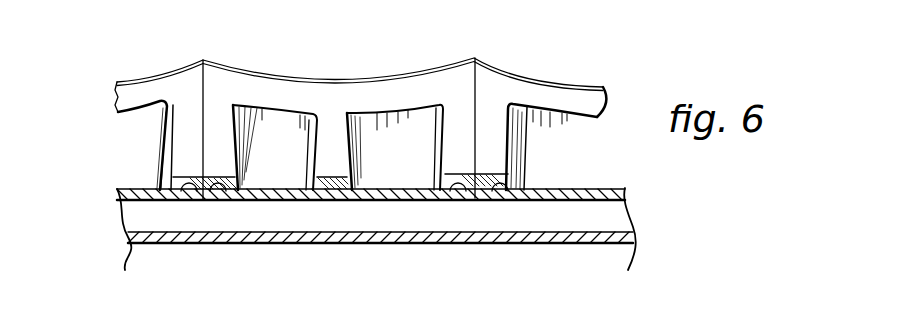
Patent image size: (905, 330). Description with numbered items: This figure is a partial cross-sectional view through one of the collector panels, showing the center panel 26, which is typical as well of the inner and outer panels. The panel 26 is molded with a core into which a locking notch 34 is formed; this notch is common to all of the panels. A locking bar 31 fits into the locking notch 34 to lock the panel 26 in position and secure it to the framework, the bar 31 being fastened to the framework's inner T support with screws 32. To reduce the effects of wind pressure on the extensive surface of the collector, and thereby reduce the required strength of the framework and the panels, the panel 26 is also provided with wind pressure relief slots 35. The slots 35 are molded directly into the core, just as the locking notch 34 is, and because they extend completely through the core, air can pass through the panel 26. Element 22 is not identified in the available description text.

The upper wall 22 is at (598, 267).
The center panel 26 is at (285, 82).
The locking bar 31 is at (152, 248).
The screws 32 is at (236, 187).
The locking notch 34 is at (347, 184).
The wind pressure relief slots 35 is at (316, 122).